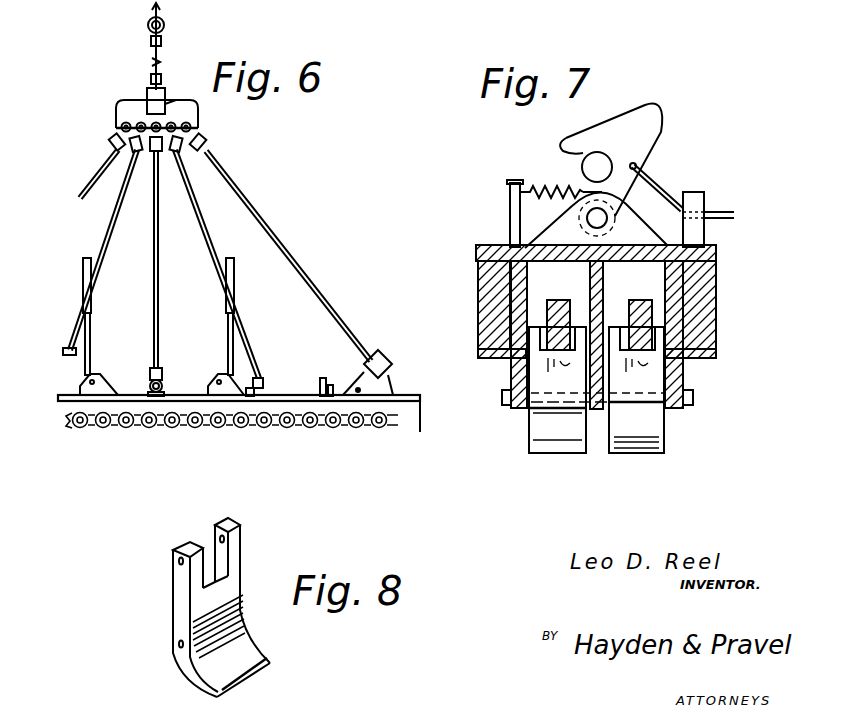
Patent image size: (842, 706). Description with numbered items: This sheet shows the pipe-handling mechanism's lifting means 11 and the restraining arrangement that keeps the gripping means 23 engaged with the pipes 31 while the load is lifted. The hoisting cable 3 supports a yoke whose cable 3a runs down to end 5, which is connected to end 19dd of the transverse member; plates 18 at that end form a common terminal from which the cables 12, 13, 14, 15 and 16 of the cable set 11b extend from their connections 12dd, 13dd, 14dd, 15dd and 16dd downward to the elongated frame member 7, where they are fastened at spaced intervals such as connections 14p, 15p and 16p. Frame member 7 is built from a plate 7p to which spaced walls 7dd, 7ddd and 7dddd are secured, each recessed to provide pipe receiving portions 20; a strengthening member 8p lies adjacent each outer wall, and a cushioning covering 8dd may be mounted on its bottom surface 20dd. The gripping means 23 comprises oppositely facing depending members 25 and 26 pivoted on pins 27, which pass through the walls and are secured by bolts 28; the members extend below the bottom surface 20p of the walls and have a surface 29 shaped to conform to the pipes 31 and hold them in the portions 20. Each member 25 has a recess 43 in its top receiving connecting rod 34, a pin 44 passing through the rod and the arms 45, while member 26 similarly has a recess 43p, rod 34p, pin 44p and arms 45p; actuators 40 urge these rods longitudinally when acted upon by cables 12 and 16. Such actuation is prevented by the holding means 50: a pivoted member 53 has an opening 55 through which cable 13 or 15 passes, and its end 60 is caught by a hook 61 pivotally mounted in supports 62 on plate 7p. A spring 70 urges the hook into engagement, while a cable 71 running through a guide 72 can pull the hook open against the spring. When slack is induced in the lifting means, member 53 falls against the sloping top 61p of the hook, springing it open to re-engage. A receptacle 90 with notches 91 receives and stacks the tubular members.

In FIG. 6, the hoisting cable 3 is at (162, 16).
In FIG. 6, the yoke cable 3a is at (153, 68).
In FIG. 6, the yoke cable end 5 is at (147, 92).
In FIG. 6, the frame member 7 is at (421, 432).
In FIG. 7, the frame member 7 is at (716, 253).
In FIG. 6, the plate 7p is at (306, 395).
In FIG. 7, the plate 7p is at (476, 253).
In FIG. 7, the outer wall 7dd is at (533, 279).
In FIG. 7, the intermediate wall 7ddd is at (609, 280).
In FIG. 7, the outer wall 7dddd is at (718, 281).
In FIG. 7, the strengthening member 8p is at (486, 290).
In FIG. 7, the covering 8dd is at (481, 358).
In FIG. 6, the lifting means 11 is at (274, 212).
In FIG. 6, the cable set 11b is at (300, 281).
In FIG. 6, the cable 12 is at (78, 200).
In FIG. 6, the cable connection 12dd is at (112, 133).
In FIG. 6, the cable 13 is at (100, 270).
In FIG. 6, the cable connection 13dd is at (138, 153).
In FIG. 6, the cable 14 is at (158, 300).
In FIG. 6, the cable connection 14p is at (143, 375).
In FIG. 6, the cable connection 14dd is at (160, 154).
In FIG. 6, the cable 15 is at (238, 334).
In FIG. 6, the cable connection 15p is at (276, 388).
In FIG. 6, the cable connection 15dd is at (168, 112).
In FIG. 6, the cable 16 is at (338, 300).
In FIG. 6, the cable connection 16p is at (385, 352).
In FIG. 6, the cable connection 16dd is at (205, 136).
In FIG. 6, the plates 18 is at (198, 125).
In FIG. 6, the transverse member end 19dd is at (118, 108).
In FIG. 6, the pipe receiving portions 20 is at (322, 428).
In FIG. 6, the bottom surface 20p is at (155, 430).
In FIG. 7, the bottom surface 20p is at (510, 402).
In FIG. 7, the bottom surface 20dd is at (728, 352).
In FIG. 6, the gripping means 23 is at (339, 430).
In FIG. 7, the depending member 25 is at (535, 437).
In FIG. 8, the depending member 25 is at (178, 648).
In FIG. 7, the depending member 26 is at (665, 438).
In FIG. 7, the pin 27 is at (500, 410).
In FIG. 7, the bolt 28 is at (688, 407).
In FIG. 8, the pipe engaging surface 29 is at (244, 642).
In FIG. 6, the pipes 31 is at (188, 430).
In FIG. 7, the connecting rod 34 is at (559, 301).
In FIG. 7, the connecting rod 34p is at (639, 303).
In FIG. 6, the actuator 40 is at (401, 376).
In FIG. 7, the recessed portion 43 is at (557, 360).
In FIG. 8, the recessed portion 43 is at (223, 578).
In FIG. 7, the recessed portion 43p is at (638, 360).
In FIG. 7, the pin 44 is at (545, 305).
In FIG. 7, the pin 44p is at (712, 331).
In FIG. 7, the arms 45 is at (540, 340).
In FIG. 8, the arms 45 is at (238, 544).
In FIG. 7, the arms 45p is at (714, 313).
In FIG. 6, the holding means 50 is at (80, 388).
In FIG. 6, the holding member 53 is at (92, 350).
In FIG. 6, the opening 55 is at (236, 302).
In FIG. 6, the member end 60 is at (84, 262).
In FIG. 7, the member end 60 is at (582, 168).
In FIG. 6, the hook 61 is at (324, 378).
In FIG. 7, the hook 61 is at (650, 137).
In FIG. 7, the sloping top 61p is at (600, 122).
In FIG. 7, the support 62 is at (642, 212).
In FIG. 7, the spring 70 is at (552, 200).
In FIG. 7, the release cable 71 is at (660, 189).
In FIG. 7, the guide 72 is at (705, 203).
In FIG. 7, the receptacle 90 is at (680, 0).
In FIG. 7, the notches 91 is at (614, 0).